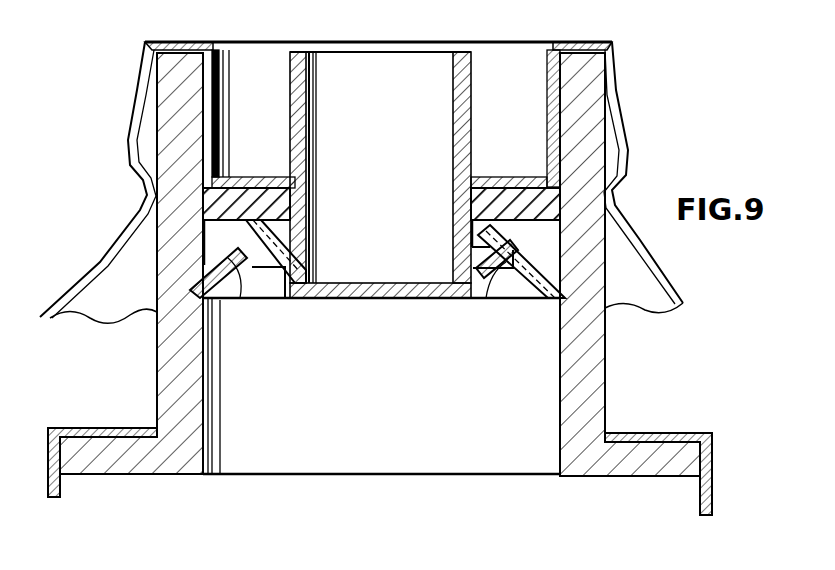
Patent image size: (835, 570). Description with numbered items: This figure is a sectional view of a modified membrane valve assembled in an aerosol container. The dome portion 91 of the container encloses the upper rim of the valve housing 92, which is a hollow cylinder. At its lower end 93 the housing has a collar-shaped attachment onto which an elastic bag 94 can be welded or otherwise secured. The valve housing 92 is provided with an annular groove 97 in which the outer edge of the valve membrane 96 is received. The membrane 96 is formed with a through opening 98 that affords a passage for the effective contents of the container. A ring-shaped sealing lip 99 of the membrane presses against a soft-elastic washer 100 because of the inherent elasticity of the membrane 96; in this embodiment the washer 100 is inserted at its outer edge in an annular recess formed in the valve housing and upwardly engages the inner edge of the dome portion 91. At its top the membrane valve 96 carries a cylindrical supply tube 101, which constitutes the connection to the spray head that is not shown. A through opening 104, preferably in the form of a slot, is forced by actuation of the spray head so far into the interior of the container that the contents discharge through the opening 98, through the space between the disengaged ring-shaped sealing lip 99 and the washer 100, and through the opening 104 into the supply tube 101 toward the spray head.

The dome portion 91 is at (78, 262).
The valve housing 92 is at (165, 267).
The lower end 93 is at (642, 455).
The elastic bag 94 is at (113, 428).
The valve membrane 96 is at (493, 265).
The annular groove 97 is at (216, 302).
The through opening 98 is at (243, 295).
The ring-shaped sealing lip 99 is at (497, 185).
The soft-elastic washer 100 is at (238, 180).
The cylindrical supply tube 101 is at (300, 125).
The through opening 104 is at (315, 178).